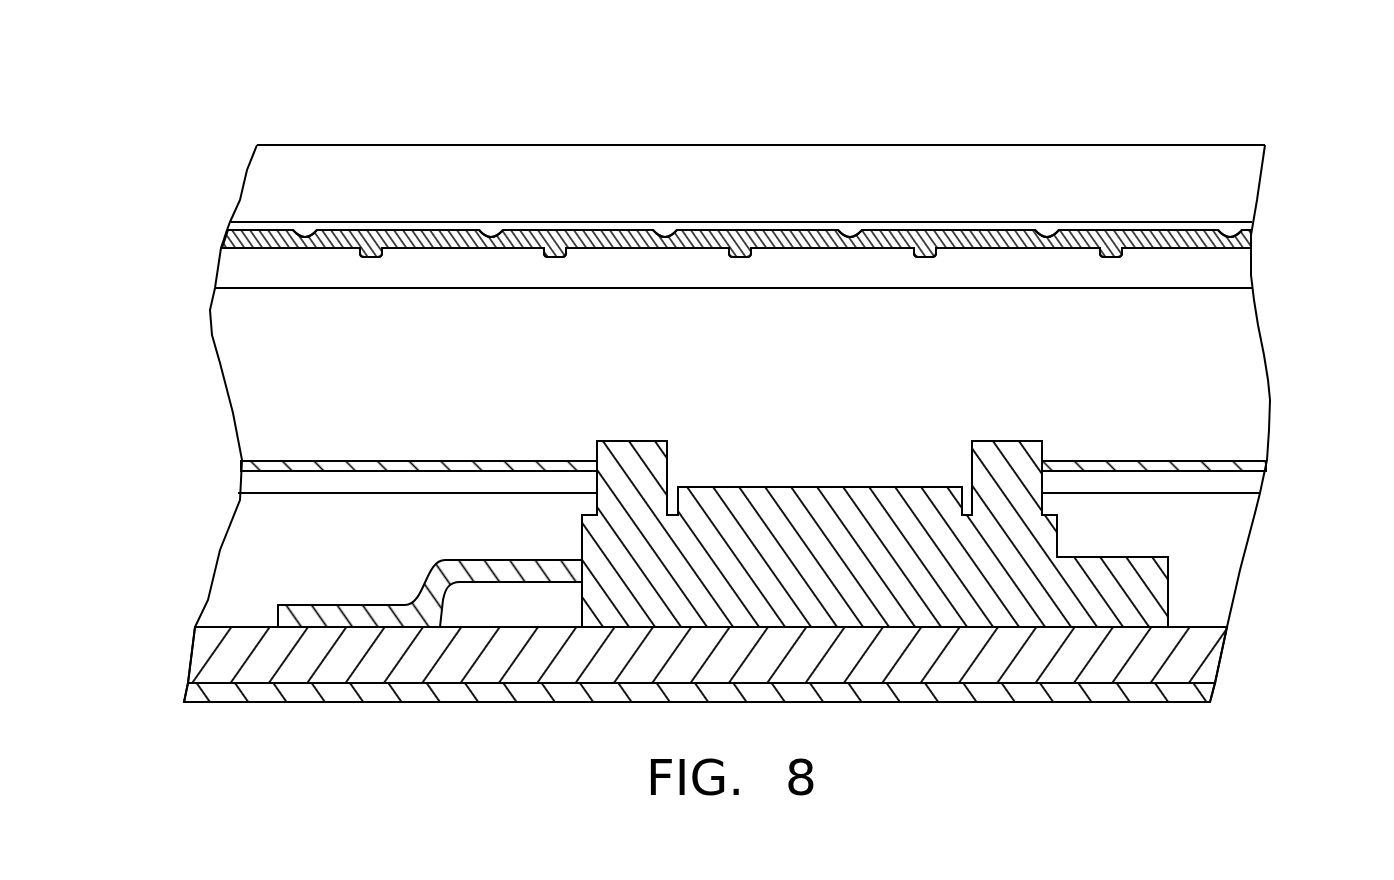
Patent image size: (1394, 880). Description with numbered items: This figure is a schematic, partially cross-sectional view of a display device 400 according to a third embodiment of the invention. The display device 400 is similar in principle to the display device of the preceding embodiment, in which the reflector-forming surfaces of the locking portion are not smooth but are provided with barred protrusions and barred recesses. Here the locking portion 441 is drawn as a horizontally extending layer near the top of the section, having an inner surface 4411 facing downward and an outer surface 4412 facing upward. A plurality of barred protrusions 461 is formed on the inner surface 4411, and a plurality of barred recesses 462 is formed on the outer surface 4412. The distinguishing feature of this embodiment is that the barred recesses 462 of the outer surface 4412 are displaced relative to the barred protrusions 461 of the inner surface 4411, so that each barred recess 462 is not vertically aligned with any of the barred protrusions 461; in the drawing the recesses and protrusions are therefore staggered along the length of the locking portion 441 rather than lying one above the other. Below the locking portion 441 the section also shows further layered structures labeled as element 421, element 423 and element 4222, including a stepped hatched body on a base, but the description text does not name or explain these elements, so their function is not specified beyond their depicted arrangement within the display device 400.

The display device 400 is at (716, 40).
The locking portion 441 is at (236, 224).
The inner surface 4411 is at (1163, 259).
The outer surface 4412 is at (761, 216).
The barred protrusions 461 is at (360, 252).
The barred recesses 462 is at (303, 238).
The liquid crystal layer 421 is at (278, 378).
The alignment layer 423 is at (300, 461).
The pixel electrode block 4222 is at (860, 503).